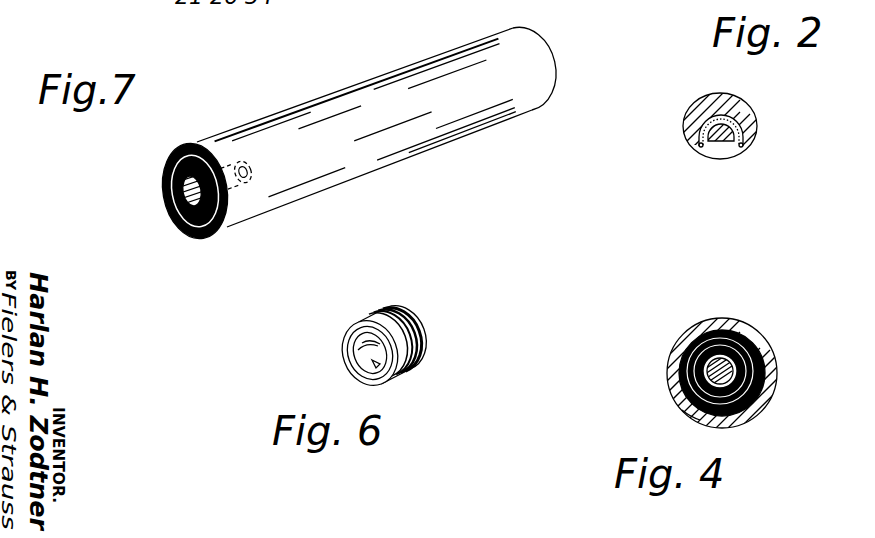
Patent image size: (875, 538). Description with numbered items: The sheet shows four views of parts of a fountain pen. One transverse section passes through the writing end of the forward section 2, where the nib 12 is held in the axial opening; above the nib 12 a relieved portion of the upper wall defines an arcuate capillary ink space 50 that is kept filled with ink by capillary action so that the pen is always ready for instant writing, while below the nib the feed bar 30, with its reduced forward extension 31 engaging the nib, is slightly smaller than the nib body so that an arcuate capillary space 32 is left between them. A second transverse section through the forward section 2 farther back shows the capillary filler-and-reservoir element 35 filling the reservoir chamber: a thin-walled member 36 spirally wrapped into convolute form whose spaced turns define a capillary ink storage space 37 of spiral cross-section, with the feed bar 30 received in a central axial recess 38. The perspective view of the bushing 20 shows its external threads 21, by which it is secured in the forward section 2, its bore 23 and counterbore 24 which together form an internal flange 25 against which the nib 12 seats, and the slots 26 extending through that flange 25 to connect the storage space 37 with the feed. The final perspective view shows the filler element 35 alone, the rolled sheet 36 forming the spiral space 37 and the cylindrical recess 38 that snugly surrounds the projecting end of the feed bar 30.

In FIG. 4, the forward section 2 is at (760, 338).
In FIG. 2, the nib 12 is at (745, 120).
In FIG. 6, the bushing 20 is at (415, 322).
In FIG. 6, the external threads 21 is at (420, 352).
In FIG. 6, the bore 23 is at (367, 347).
In FIG. 6, the counterbore 24 is at (360, 368).
In FIG. 6, the internal flange 25 is at (387, 363).
In FIG. 6, the slots 26 is at (380, 362).
In FIG. 4, the feed bar 30 is at (773, 387).
In FIG. 2, the reduced forward extension 31 is at (742, 141).
In FIG. 2, the arcuate capillary space 32 is at (692, 128).
In FIG. 7, the capillary filler-and-reservoir element 35 is at (440, 135).
In FIG. 4, the capillary filler-and-reservoir element 35 is at (777, 368).
In FIG. 7, the thin-walled member 36 is at (523, 50).
In FIG. 4, the capillary ink storage space 37 is at (763, 352).
In FIG. 7, the axial recess 38 is at (165, 196).
In FIG. 4, the axial recess 38 is at (687, 410).
In FIG. 2, the arcuate capillary ink space 50 is at (735, 104).